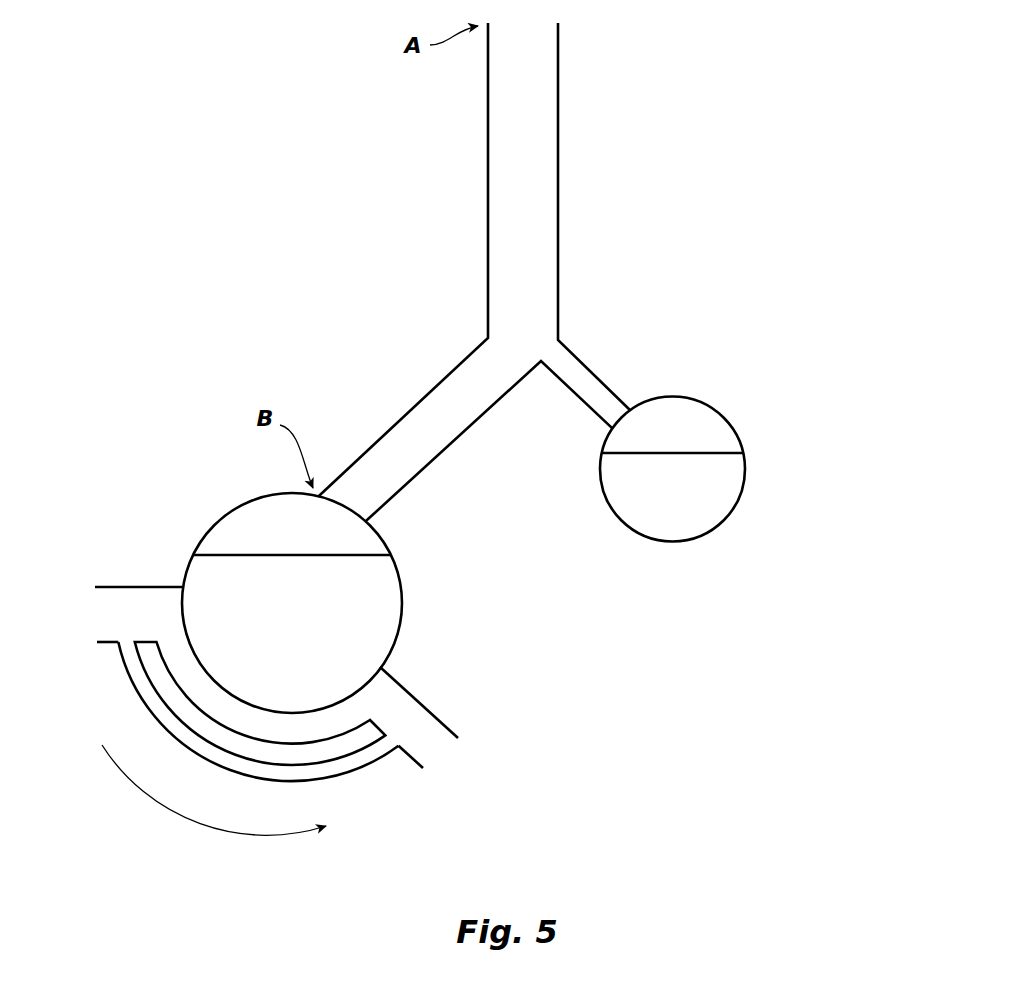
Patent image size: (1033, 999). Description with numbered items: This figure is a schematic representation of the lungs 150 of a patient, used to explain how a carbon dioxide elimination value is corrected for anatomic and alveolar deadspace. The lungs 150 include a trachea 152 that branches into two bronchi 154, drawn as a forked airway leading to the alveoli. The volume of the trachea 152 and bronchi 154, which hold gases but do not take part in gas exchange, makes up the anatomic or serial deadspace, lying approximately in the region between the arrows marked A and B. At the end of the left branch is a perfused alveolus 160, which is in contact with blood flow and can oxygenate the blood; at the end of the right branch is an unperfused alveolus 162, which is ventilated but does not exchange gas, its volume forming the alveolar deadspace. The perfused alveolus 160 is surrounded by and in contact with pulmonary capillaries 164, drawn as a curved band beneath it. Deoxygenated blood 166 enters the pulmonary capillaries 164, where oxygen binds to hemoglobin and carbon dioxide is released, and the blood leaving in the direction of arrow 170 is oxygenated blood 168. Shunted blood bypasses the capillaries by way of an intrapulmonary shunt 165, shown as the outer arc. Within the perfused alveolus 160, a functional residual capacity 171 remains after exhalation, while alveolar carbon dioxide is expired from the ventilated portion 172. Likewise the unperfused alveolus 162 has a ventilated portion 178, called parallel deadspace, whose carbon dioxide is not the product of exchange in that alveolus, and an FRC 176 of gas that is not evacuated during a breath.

The lungs 150 is at (792, 359).
The trachea 152 is at (540, 120).
The bronchi 154 is at (432, 465).
The perfused alveoli 160 is at (213, 527).
The unperfused alveoli 162 is at (717, 527).
The pulmonary capillaries 164 is at (228, 732).
The intrapulmonary shunt 165 is at (355, 762).
The deoxygenated blood 166 is at (113, 623).
The oxygenated blood 168 is at (415, 740).
The arrow 170 is at (200, 827).
The functional residual capacity (FRC) 171 is at (375, 600).
The ventilated portion of perfused alveoli 172 is at (367, 538).
The FRC of unperfused alveoli 176 is at (634, 512).
The ventilated portion of unperfused alveoli 178 is at (668, 407).